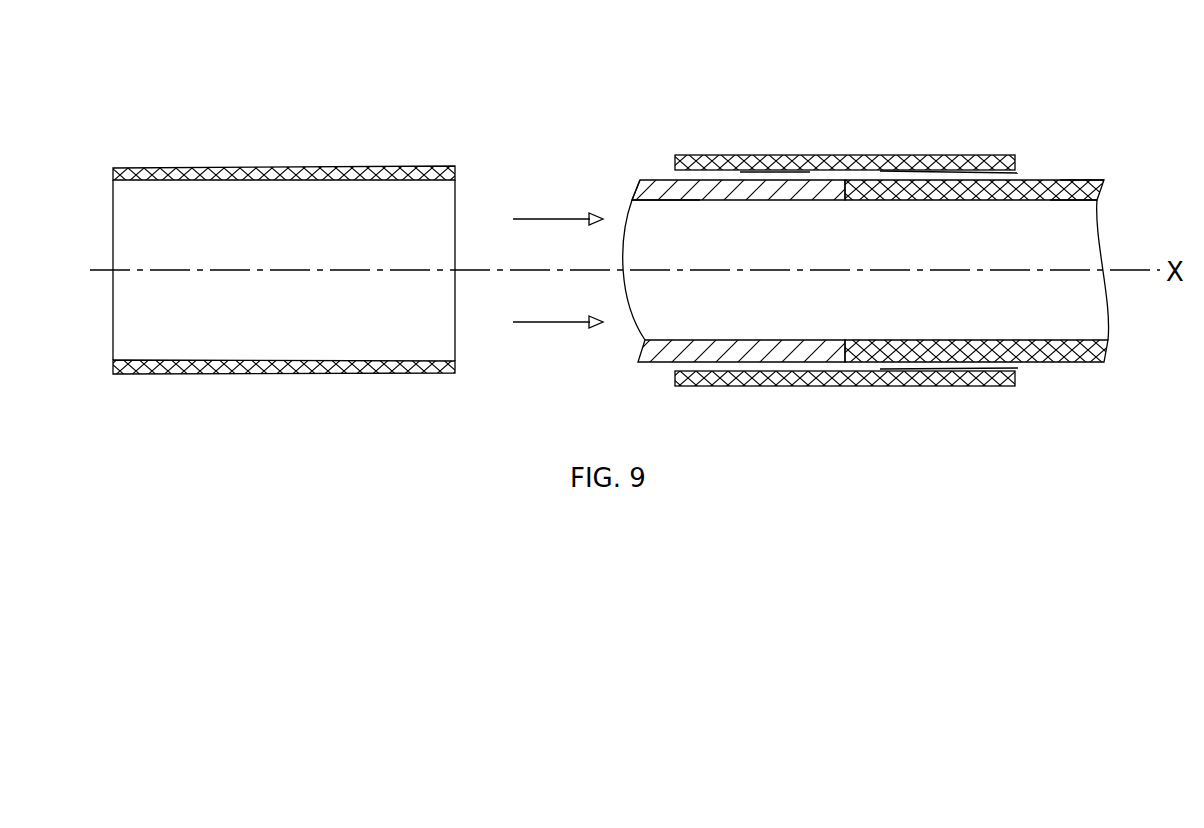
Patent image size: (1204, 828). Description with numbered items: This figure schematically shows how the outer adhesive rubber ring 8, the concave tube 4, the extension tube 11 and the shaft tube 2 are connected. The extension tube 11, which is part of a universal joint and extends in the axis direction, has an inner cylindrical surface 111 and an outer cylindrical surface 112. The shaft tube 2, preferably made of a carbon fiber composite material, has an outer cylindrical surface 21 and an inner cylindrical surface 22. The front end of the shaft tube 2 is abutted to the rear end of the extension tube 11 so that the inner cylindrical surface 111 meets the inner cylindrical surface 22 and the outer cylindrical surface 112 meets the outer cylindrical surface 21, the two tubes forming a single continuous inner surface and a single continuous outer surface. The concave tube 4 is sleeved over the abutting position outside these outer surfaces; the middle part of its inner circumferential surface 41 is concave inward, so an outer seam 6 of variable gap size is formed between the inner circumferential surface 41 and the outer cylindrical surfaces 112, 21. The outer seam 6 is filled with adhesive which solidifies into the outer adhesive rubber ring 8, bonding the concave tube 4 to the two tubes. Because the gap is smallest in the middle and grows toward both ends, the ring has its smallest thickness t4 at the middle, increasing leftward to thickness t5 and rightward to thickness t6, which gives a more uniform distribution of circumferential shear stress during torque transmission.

The outer adhesive rubber ring 8 is at (185, 166).
The thickness of the middle part of the outer adhesive rubber ring t4 is at (283, 200).
The thickness at the left part of the outer adhesive rubber ring t5 is at (103, 200).
The thickness at the right part of the outer adhesive rubber ring t6 is at (467, 200).
The extension tube 11 is at (665, 180).
The inner cylindrical surface of the extension tube 111 is at (649, 208).
The outer cylindrical surface of the extension tube 112 is at (643, 172).
The shaft tube 2 is at (1058, 180).
The outer cylindrical surface of the shaft tube 21 is at (1094, 172).
The inner cylindrical surface of the shaft tube 22 is at (1088, 208).
The concave tube 4 is at (725, 155).
The inner circumferential surface of the concave tube 41 is at (771, 182).
The outer seam 6 is at (1006, 172).